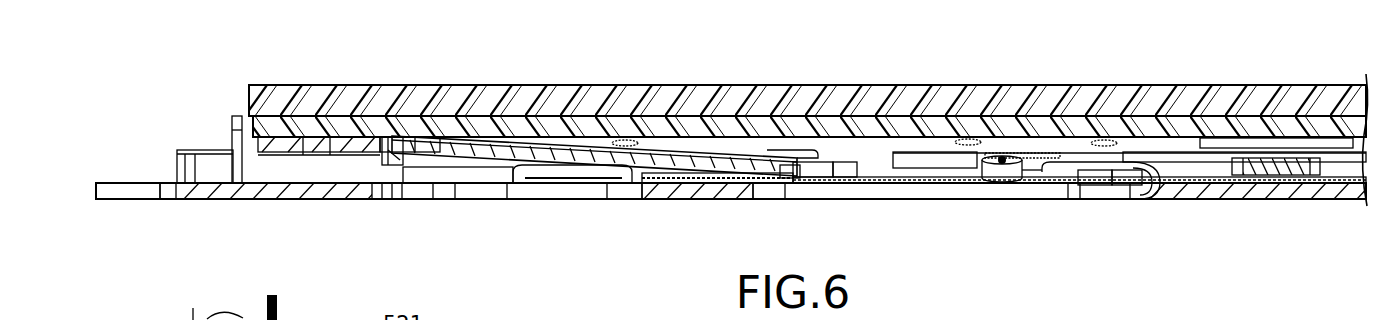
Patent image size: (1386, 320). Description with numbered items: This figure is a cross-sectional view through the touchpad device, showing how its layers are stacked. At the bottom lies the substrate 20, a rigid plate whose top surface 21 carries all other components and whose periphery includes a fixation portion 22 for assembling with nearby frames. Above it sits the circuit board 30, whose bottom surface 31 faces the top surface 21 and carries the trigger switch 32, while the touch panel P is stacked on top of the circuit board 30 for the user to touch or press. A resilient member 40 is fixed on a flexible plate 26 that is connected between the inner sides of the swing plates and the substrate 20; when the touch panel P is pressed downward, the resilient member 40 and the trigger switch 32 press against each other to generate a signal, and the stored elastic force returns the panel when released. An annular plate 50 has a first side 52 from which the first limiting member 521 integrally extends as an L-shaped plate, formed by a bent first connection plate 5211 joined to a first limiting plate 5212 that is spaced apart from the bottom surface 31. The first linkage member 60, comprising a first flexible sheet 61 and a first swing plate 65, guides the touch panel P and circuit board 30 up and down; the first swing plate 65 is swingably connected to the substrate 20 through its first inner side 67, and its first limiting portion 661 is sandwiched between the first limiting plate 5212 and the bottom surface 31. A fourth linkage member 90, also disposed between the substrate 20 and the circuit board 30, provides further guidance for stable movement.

The touch panel P is at (1180, 96).
The substrate 20 is at (1253, 190).
The top surface 21 is at (1335, 182).
The fixation portion 22 is at (142, 192).
The flexible plate 26 is at (686, 193).
The circuit board 30 is at (1226, 136).
The bottom surface 31 is at (452, 167).
The trigger switch 32 is at (1281, 160).
The resilient member 40 is at (1297, 178).
The annular plate 50 is at (283, 142).
The first side 52 is at (334, 140).
The first limiting member 521 is at (457, 43).
The first connection plate 5211 is at (386, 150).
The first limiting plate 5212 is at (418, 150).
The first linkage member 60 is at (605, 211).
The first flexible sheet 61 is at (592, 249).
The first swing plate 65 is at (573, 158).
The first limiting portion 661 is at (381, 166).
The first inner side 67 is at (773, 171).
The fourth linkage member 90 is at (1001, 168).